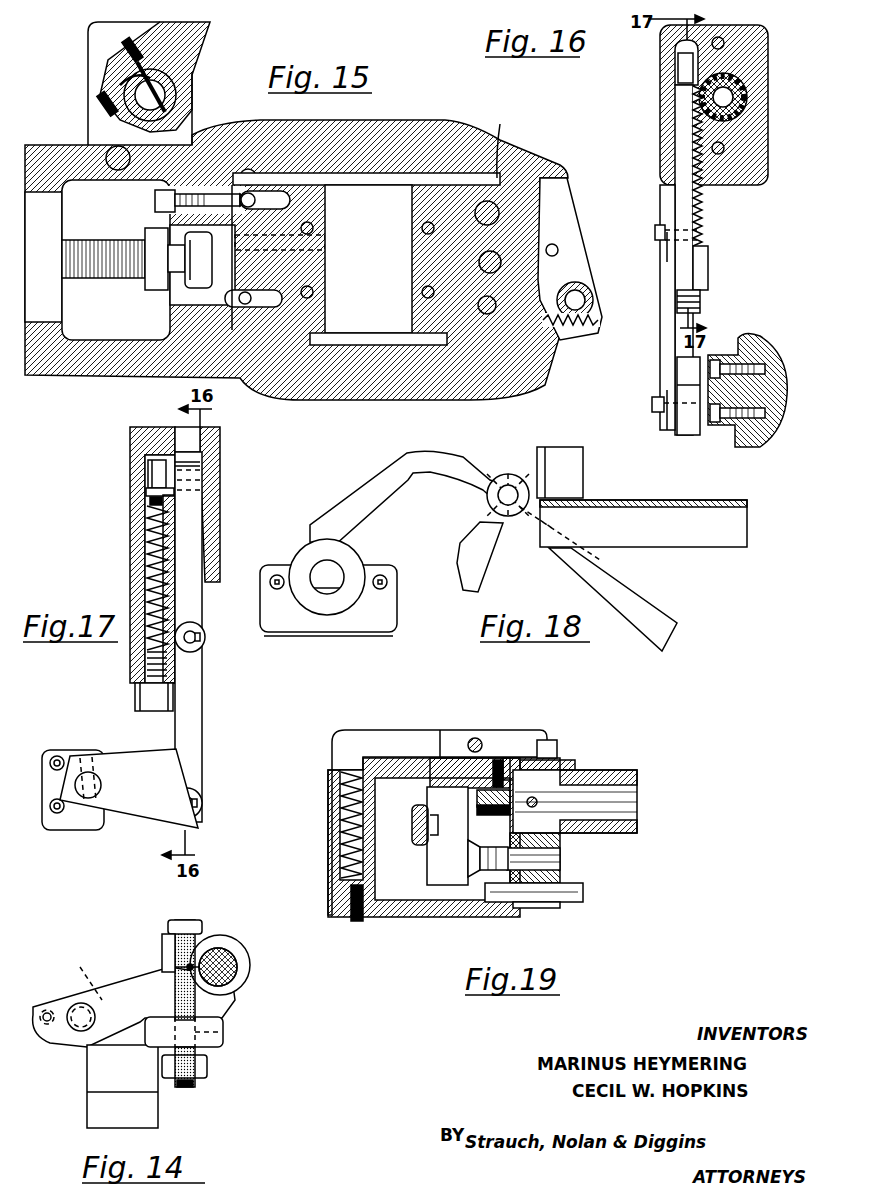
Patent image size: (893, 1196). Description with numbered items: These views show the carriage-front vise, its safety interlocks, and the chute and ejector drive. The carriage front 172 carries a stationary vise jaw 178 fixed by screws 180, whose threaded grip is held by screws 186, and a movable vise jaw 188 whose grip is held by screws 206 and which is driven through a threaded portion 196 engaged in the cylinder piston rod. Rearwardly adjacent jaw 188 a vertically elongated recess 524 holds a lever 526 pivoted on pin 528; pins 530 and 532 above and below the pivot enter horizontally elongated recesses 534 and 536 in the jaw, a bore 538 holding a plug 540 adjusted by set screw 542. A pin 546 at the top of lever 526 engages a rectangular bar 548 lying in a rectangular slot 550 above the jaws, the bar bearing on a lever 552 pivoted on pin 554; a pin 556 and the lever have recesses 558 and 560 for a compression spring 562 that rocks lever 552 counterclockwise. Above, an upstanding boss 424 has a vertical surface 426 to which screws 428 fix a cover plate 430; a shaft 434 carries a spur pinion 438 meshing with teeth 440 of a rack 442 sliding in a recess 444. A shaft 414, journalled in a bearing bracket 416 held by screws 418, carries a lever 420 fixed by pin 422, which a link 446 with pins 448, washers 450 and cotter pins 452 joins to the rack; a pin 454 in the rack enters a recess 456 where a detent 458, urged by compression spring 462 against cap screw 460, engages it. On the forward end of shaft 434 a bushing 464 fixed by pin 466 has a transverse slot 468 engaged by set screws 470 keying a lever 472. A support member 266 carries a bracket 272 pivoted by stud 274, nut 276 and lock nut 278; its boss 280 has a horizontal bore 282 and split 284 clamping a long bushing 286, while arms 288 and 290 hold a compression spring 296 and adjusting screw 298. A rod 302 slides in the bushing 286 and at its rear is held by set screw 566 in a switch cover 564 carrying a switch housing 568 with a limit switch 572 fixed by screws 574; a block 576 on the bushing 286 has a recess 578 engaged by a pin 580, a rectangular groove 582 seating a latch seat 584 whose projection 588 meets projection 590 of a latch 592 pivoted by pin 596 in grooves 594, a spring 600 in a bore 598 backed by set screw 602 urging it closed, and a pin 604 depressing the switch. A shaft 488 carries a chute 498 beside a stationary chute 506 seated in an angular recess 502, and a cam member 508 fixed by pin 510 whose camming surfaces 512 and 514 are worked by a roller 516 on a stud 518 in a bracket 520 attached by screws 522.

In FIG. 15, the carriage front 172 is at (443, 128).
In FIG. 15, the stationary vise jaw 178 is at (428, 323).
In FIG. 15, the screws 180 is at (500, 165).
In FIG. 15, the screws 186 is at (430, 232).
In FIG. 15, the movable vise jaw 188 is at (182, 323).
In FIG. 15, the threaded portion 196 is at (112, 279).
In FIG. 15, the screws 206 is at (313, 291).
In FIG. 14, the support member 266 is at (100, 1112).
In FIG. 14, the bracket 272 is at (152, 986).
In FIG. 14, the stud 274 is at (222, 1033).
In FIG. 14, the nut 276 is at (170, 922).
In FIG. 14, the lock nut 278 is at (204, 1063).
In FIG. 14, the boss 280 is at (238, 943).
In FIG. 14, the horizontal bore 282 is at (238, 961).
In FIG. 14, the split 284 is at (168, 966).
In FIG. 19, the long bushing 286 is at (636, 778).
In FIG. 14, the long bushing 286 is at (210, 950).
In FIG. 14, the arm 288 is at (72, 976).
In FIG. 14, the arm 290 is at (60, 1032).
In FIG. 14, the compression spring 296 is at (90, 1031).
In FIG. 14, the screw 298 is at (47, 1012).
In FIG. 19, the rod 302 is at (630, 800).
In FIG. 14, the rod 302 is at (238, 975).
In FIG. 17, the shaft 414 is at (98, 800).
In FIG. 16, the bearing bracket 416 is at (728, 428).
In FIG. 17, the bearing bracket 416 is at (117, 752).
In FIG. 16, the screws 418 is at (742, 342).
In FIG. 17, the screws 418 is at (57, 758).
In FIG. 16, the lever 420 is at (690, 437).
In FIG. 17, the lever 420 is at (165, 770).
In FIG. 17, the pin 422 is at (98, 772).
In FIG. 15, the boss 424 is at (92, 62).
In FIG. 16, the boss 424 is at (760, 185).
In FIG. 17, the vertical surface 426 is at (172, 430).
In FIG. 16, the screws 428 is at (724, 42).
In FIG. 17, the cover plate 430 is at (140, 448).
In FIG. 15, the shaft 434 is at (168, 94).
In FIG. 16, the shaft 434 is at (741, 95).
In FIG. 16, the spur pinion 438 is at (746, 108).
In FIG. 17, the spur pinion 438 is at (205, 470).
In FIG. 16, the teeth 440 is at (702, 214).
In FIG. 16, the rack 442 is at (684, 190).
In FIG. 17, the rack 442 is at (193, 586).
In FIG. 16, the recess 444 is at (686, 45).
In FIG. 17, the recess 444 is at (192, 451).
In FIG. 16, the link 446 is at (668, 341).
In FIG. 17, the link 446 is at (196, 736).
In FIG. 16, the pins 448 is at (657, 226).
In FIG. 17, the pins 448 is at (197, 650).
In FIG. 16, the washers 450 is at (662, 246).
In FIG. 17, the washers 450 is at (201, 634).
In FIG. 16, the cotter pins 452 is at (656, 236).
In FIG. 17, the cotter pins 452 is at (197, 640).
In FIG. 16, the pin 454 is at (679, 91).
In FIG. 17, the pin 454 is at (150, 492).
In FIG. 16, the recess 456 is at (682, 66).
In FIG. 17, the recess 456 is at (158, 456).
In FIG. 17, the detent 458 is at (150, 506).
In FIG. 16, the cap screw 460 is at (702, 300).
In FIG. 17, the cap screw 460 is at (138, 696).
In FIG. 17, the compression spring 462 is at (145, 578).
In FIG. 15, the bushing 464 is at (163, 108).
In FIG. 15, the pin 466 is at (165, 78).
In FIG. 15, the transverse slot 468 is at (128, 80).
In FIG. 15, the set screws 470 is at (130, 44).
In FIG. 15, the lever 472 is at (206, 29).
In FIG. 18, the shaft 488 is at (496, 503).
In FIG. 18, the chute 498 is at (616, 576).
In FIG. 18, the angular recess 502 is at (560, 472).
In FIG. 18, the stationary chute 506 is at (700, 541).
In FIG. 18, the cam member 508 is at (505, 522).
In FIG. 18, the pin 510 is at (486, 496).
In FIG. 18, the camming surface 512 is at (366, 505).
In FIG. 18, the camming surface 514 is at (456, 578).
In FIG. 18, the roller 516 is at (326, 615).
In FIG. 18, the stud 518 is at (320, 570).
In FIG. 18, the bracket 520 is at (392, 619).
In FIG. 18, the screws 522 is at (277, 575).
In FIG. 15, the vertically elongated recess 524 is at (293, 250).
In FIG. 15, the lever 526 is at (314, 272).
In FIG. 15, the pin 528 is at (314, 235).
In FIG. 15, the pin 530 is at (240, 195).
In FIG. 15, the pin 532 is at (245, 305).
In FIG. 15, the recess 534 is at (291, 200).
In FIG. 15, the recess 536 is at (283, 300).
In FIG. 15, the bore 538 is at (160, 195).
In FIG. 15, the plug 540 is at (182, 212).
In FIG. 15, the set screw 542 is at (158, 206).
In FIG. 15, the pin 546 is at (250, 169).
In FIG. 15, the rectangular bar 548 is at (386, 186).
In FIG. 15, the rectangular slot 550 is at (519, 155).
In FIG. 15, the lever 552 is at (556, 221).
In FIG. 15, the pin 554 is at (560, 251).
In FIG. 15, the pin 556 is at (548, 360).
In FIG. 15, the recess 558 is at (550, 347).
In FIG. 15, the recess 560 is at (586, 337).
In FIG. 15, the compression spring 562 is at (598, 320).
In FIG. 19, the switch cover 564 is at (497, 917).
In FIG. 19, the set screw 566 is at (497, 757).
In FIG. 19, the switch housing 568 is at (340, 841).
In FIG. 19, the limit switch 572 is at (446, 885).
In FIG. 19, the screws 574 is at (431, 824).
In FIG. 19, the block 576 is at (561, 840).
In FIG. 19, the recess 578 is at (548, 908).
In FIG. 19, the pin 580 is at (584, 890).
In FIG. 19, the rectangular groove 582 is at (566, 767).
In FIG. 19, the latch seat 584 is at (561, 760).
In FIG. 19, the projection 588 is at (528, 757).
In FIG. 19, the projection 590 is at (548, 744).
In FIG. 19, the latch 592 is at (421, 737).
In FIG. 19, the grooves 594 is at (365, 736).
In FIG. 19, the pin 596 is at (476, 738).
In FIG. 19, the bore 598 is at (340, 810).
In FIG. 19, the spring 600 is at (350, 790).
In FIG. 19, the set screw 602 is at (345, 920).
In FIG. 19, the pin 604 is at (561, 860).